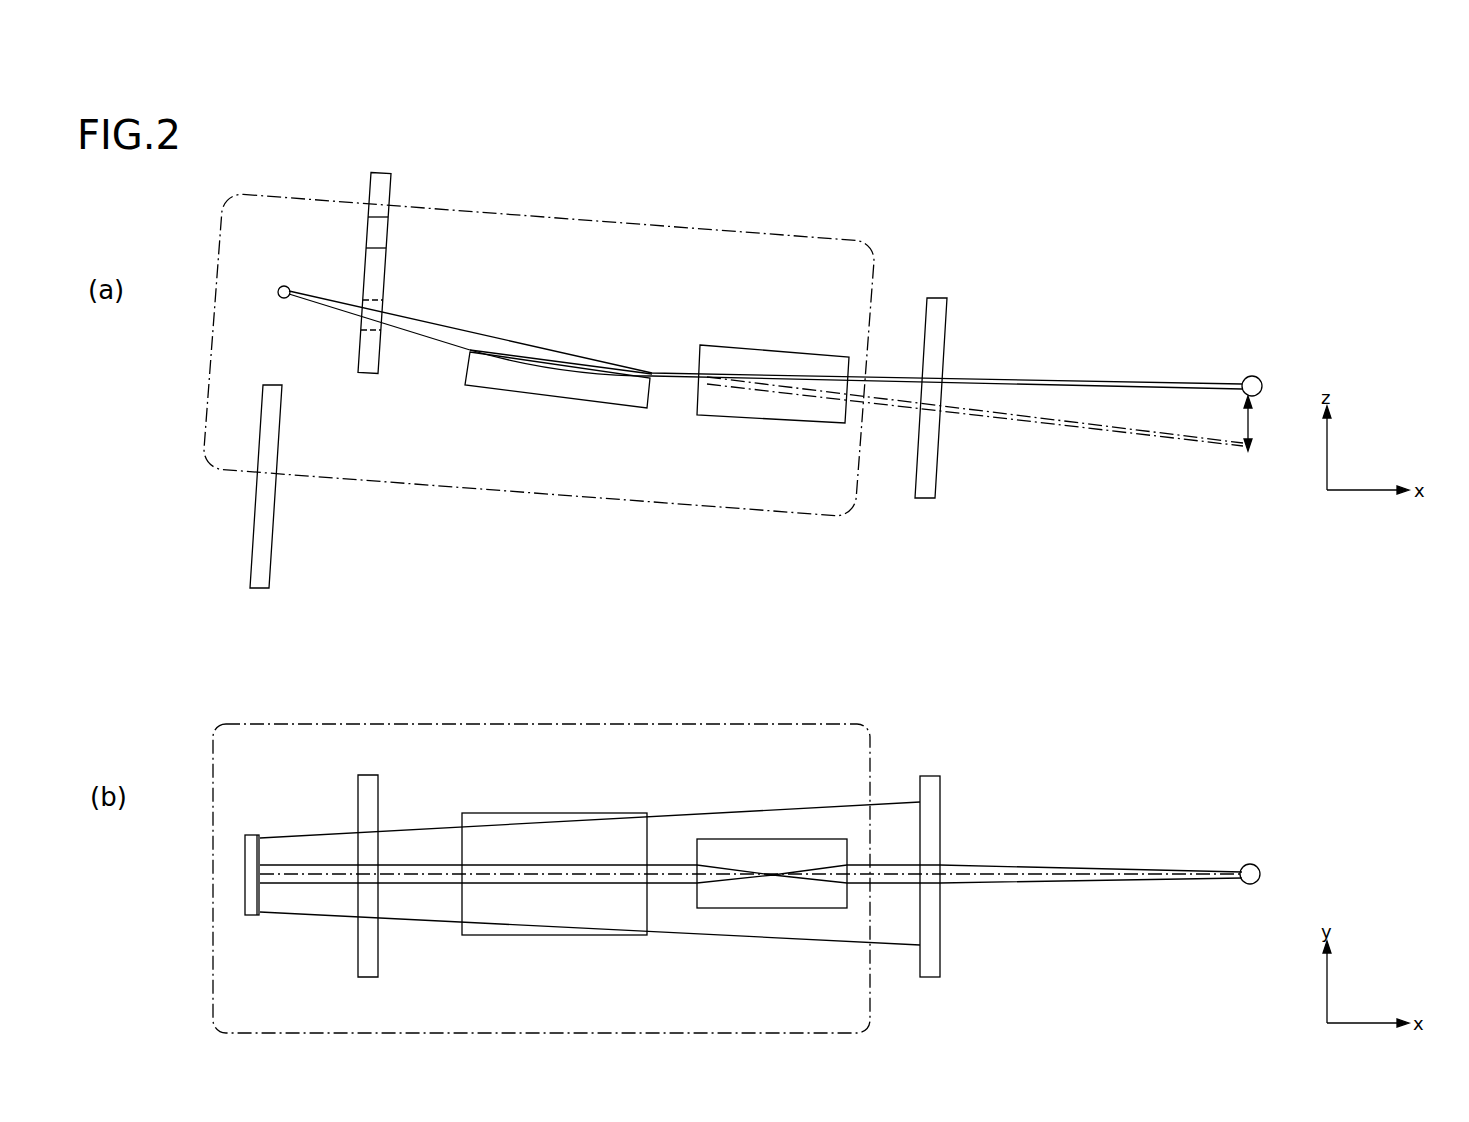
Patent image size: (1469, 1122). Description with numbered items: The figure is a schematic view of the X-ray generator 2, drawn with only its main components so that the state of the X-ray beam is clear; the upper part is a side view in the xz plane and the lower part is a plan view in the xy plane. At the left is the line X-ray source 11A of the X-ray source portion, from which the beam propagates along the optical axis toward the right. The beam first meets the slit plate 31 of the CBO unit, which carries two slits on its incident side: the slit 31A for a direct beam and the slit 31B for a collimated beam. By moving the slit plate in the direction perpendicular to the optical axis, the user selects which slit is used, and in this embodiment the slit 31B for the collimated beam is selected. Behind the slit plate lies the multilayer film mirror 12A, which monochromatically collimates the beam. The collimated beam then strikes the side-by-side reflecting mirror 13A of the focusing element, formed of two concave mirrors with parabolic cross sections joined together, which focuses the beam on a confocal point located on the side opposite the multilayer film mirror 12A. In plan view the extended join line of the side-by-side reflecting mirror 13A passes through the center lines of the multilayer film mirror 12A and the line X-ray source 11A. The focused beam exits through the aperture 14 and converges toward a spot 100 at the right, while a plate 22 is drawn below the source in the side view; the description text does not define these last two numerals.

The X-ray generator 2 is at (846, 194).
The line X-ray source 11A is at (277, 293).
The multilayer film mirror 12A is at (608, 393).
The side-by-side reflecting mirror 13A is at (787, 413).
The aperture 14 is at (938, 326).
The reflecting member / plate 22 is at (261, 562).
The slit plate 31 is at (392, 187).
The slit for direct beam 31A is at (378, 239).
The slit for collimated beam 31B is at (383, 310).
The light spot / irradiation target 100 is at (1250, 375).